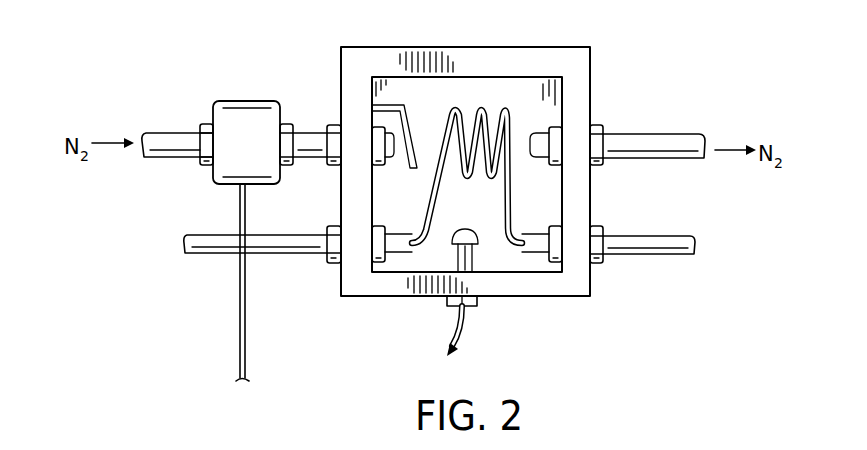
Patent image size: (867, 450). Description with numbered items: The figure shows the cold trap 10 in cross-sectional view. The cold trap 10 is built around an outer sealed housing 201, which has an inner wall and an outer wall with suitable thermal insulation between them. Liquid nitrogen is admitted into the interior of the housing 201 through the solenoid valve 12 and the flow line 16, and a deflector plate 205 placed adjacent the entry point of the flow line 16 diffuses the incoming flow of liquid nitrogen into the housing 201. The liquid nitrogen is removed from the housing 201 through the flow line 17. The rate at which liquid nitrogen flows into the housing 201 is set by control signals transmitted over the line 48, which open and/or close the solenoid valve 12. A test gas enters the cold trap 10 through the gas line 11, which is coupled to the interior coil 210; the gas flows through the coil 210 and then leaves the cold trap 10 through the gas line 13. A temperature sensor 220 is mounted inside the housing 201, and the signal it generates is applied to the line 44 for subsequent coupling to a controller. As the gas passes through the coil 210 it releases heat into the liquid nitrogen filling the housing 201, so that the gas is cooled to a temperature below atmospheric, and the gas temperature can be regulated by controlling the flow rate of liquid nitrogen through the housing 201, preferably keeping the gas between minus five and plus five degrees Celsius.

The cold trap 10 is at (582, 40).
The gas line 11 is at (272, 255).
The solenoid valve 12 is at (259, 164).
The gas line 13 is at (641, 242).
The flow line 16 is at (313, 138).
The flow line 17 is at (636, 141).
The line 44 is at (470, 329).
The line 48 is at (246, 357).
The outer sealed housing 201 is at (593, 87).
The deflector plate 205 is at (415, 133).
The interior coil 210 is at (478, 114).
The temperature sensor 220 is at (455, 229).